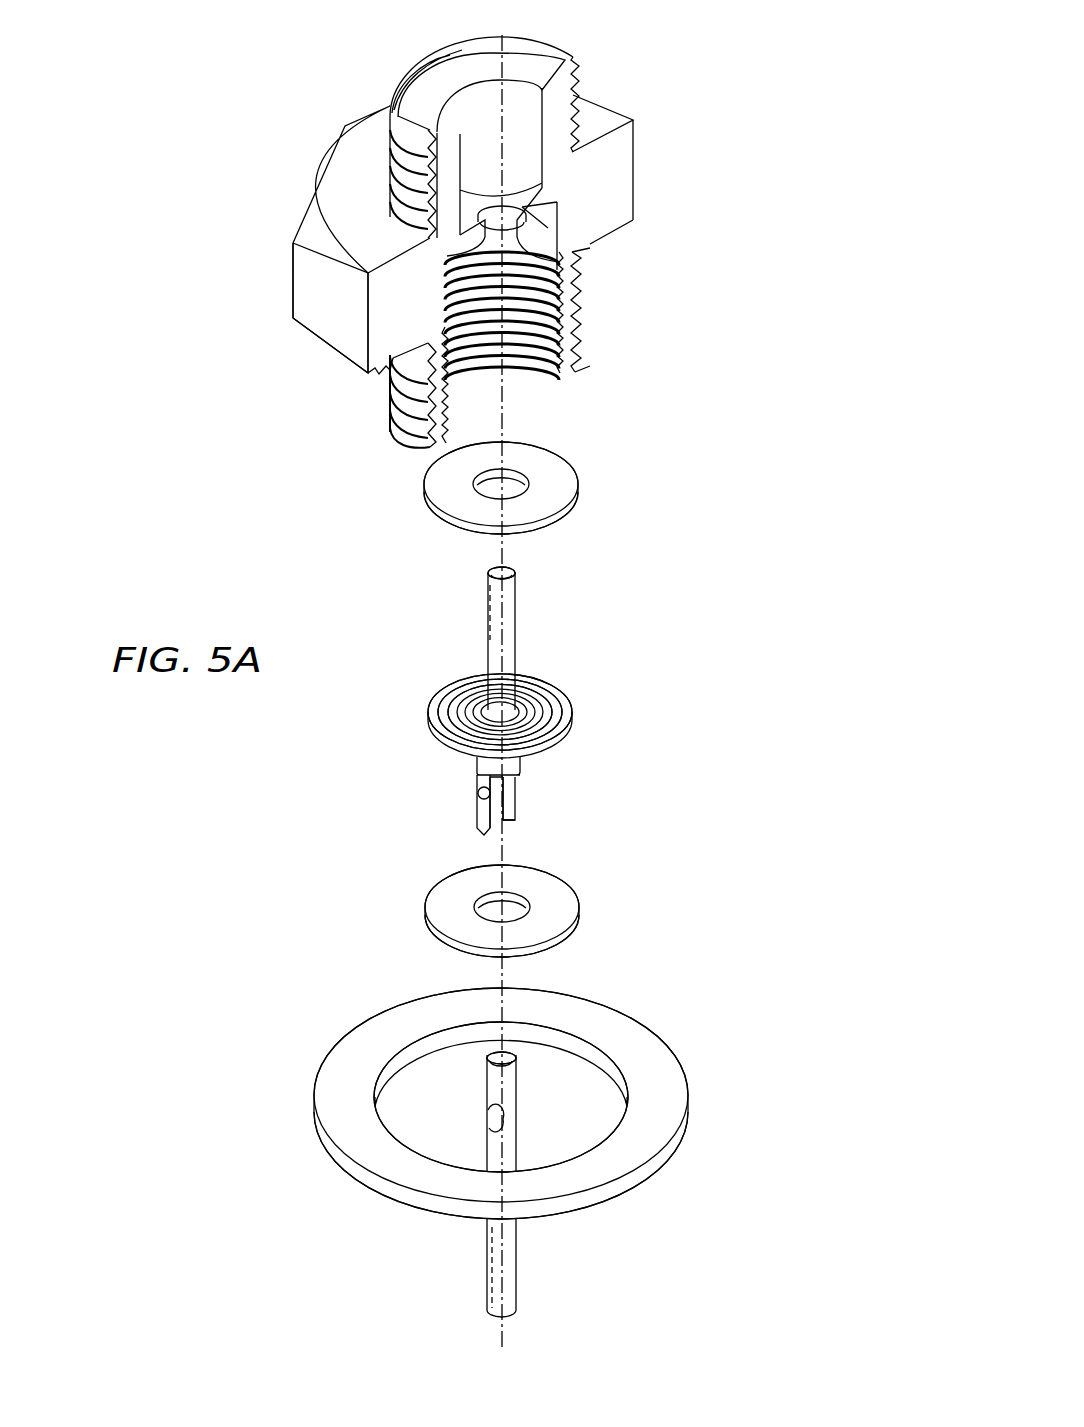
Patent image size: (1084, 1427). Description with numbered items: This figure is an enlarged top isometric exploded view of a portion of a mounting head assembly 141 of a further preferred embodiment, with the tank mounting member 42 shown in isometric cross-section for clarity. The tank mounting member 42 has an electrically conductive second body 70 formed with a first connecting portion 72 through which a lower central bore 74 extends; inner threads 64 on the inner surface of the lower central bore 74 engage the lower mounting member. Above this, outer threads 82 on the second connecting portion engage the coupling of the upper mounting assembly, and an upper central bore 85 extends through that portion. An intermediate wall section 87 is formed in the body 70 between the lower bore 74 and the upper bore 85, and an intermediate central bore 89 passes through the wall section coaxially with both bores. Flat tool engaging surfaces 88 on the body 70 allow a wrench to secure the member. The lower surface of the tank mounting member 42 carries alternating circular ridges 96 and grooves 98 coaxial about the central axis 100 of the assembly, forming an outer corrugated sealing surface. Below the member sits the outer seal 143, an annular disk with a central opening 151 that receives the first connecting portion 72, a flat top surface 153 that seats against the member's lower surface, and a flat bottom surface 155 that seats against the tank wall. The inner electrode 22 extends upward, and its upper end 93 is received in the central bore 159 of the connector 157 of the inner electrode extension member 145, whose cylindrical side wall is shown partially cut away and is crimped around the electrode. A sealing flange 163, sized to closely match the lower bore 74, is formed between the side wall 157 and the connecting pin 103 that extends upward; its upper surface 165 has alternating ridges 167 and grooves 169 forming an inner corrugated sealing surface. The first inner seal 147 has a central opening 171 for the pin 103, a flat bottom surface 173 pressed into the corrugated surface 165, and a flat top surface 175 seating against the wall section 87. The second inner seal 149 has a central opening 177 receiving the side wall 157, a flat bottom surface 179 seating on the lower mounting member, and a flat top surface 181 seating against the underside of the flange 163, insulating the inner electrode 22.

The inner electrode 22 is at (518, 1274).
The tank mounting member 42 is at (312, 182).
The inner threads 64 is at (460, 340).
The second body 70 is at (634, 155).
The first connecting portion 72 is at (578, 327).
The lower central bore 74 is at (528, 377).
The outer threads 82 is at (400, 135).
The upper central bore 85 is at (524, 98).
The intermediate wall section 87 is at (522, 208).
The flat tool engaging surfaces 88 is at (320, 318).
The intermediate central bore 89 is at (509, 200).
The upper end 93 is at (510, 1080).
The ridges 96 is at (588, 246).
The grooves 98 is at (577, 250).
The central axis 100 is at (504, 565).
The connecting pin 103 is at (493, 590).
The mounting head assembly 141 is at (752, 290).
The outer seal 143 is at (700, 1110).
The inner electrode extension member 145 is at (578, 730).
The first inner seal 147 is at (582, 490).
The second inner seal 149 is at (588, 912).
The central opening 151 is at (416, 1098).
The flat top surface 153 is at (330, 1111).
The flat bottom surface 155 is at (357, 1176).
The connector 157 is at (480, 795).
The central bore 159 is at (513, 823).
The sealing flange 163 is at (537, 747).
The upper surface 165 is at (478, 665).
The ridges 167 is at (552, 681).
The grooves 169 is at (447, 698).
The central opening 171 is at (467, 484).
The flat bottom surface 173 is at (563, 520).
The flat top surface 175 is at (430, 497).
The central opening 177 is at (476, 894).
The flat bottom surface 179 is at (558, 947).
The flat top surface 181 is at (430, 912).